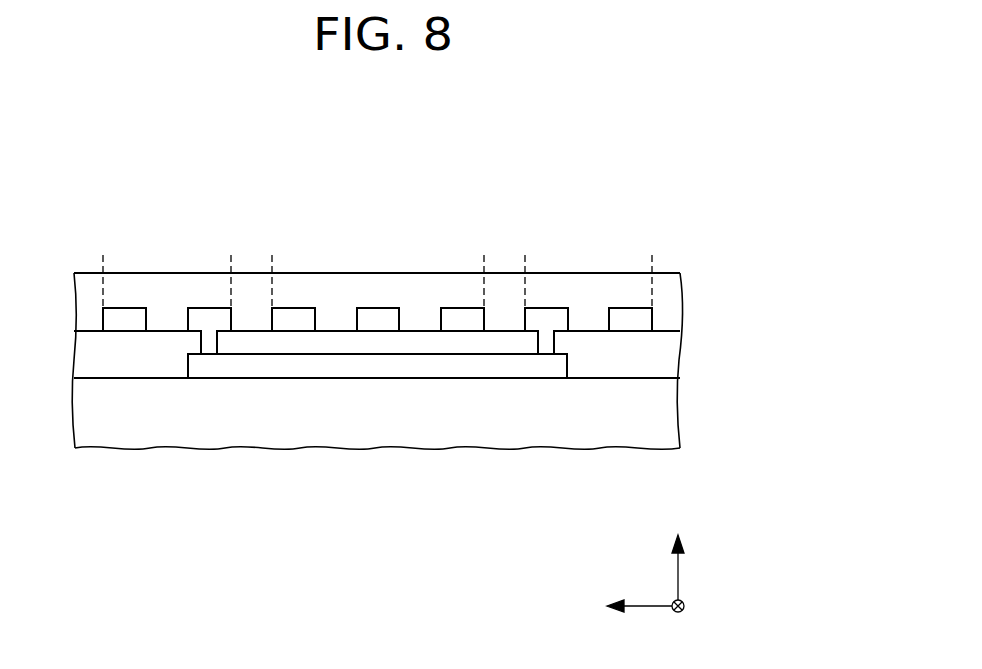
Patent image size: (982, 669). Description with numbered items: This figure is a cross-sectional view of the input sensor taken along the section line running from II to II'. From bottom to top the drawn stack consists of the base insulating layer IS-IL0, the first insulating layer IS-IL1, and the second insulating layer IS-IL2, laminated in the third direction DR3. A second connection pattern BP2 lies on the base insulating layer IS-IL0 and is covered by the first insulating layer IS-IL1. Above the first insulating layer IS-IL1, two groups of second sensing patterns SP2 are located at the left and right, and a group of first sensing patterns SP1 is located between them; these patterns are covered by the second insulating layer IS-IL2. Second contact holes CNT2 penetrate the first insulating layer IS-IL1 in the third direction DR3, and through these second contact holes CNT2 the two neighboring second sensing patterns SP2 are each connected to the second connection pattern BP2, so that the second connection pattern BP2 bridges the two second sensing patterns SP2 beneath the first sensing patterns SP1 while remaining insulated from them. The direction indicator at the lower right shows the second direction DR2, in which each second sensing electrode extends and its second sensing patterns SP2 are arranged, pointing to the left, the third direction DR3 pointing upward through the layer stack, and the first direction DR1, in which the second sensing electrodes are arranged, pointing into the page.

The second insulating layer IS-IL2 is at (672, 302).
The first insulating layer IS-IL1 is at (672, 358).
The base insulating layer IS-IL0 is at (668, 412).
The second connection pattern BP2 is at (387, 366).
The second contact hole CNT2 is at (201, 341).
The first sensing pattern SP1 is at (272, 256).
The second sensing pattern SP2 is at (103, 256).
The section line II is at (74, 465).
The section line II' is at (685, 465).
The first direction DR1 is at (677, 620).
The second direction DR2 is at (618, 606).
The third direction DR3 is at (677, 554).